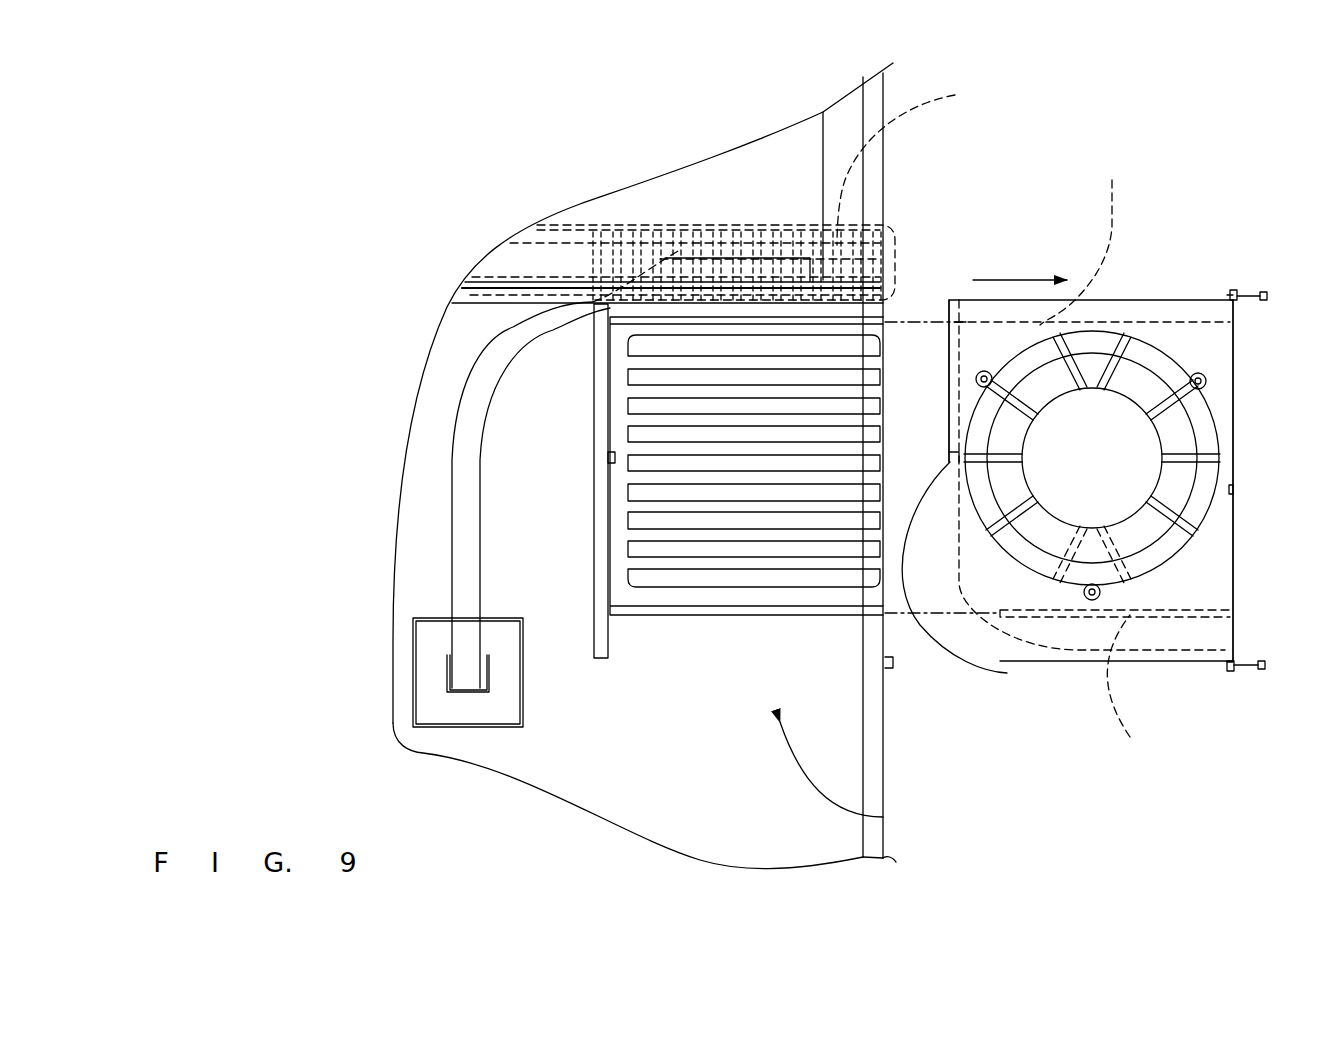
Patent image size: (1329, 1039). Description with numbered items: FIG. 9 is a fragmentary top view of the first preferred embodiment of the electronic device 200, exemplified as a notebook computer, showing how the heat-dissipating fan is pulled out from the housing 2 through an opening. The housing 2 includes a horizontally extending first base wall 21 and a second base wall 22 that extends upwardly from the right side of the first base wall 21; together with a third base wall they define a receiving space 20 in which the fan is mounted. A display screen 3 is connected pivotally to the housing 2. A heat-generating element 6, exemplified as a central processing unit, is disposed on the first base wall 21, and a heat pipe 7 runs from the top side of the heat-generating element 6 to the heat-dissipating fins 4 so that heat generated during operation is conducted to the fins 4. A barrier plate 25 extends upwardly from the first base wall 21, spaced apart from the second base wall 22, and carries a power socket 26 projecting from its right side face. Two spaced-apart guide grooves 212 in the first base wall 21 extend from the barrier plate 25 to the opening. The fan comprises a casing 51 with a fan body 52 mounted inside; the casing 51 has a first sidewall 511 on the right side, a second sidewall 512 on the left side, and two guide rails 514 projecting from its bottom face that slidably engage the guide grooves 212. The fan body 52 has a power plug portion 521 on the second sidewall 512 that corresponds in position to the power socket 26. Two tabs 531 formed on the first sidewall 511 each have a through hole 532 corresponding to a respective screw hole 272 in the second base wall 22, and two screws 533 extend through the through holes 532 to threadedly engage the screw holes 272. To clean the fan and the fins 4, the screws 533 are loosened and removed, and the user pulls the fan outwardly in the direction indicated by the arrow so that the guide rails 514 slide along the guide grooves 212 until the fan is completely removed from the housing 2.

The electronic device 200 is at (640, 127).
The housing 2 is at (1052, 862).
The display screen 3 is at (853, 113).
The heat-dissipating fins 4 is at (907, 164).
The heat-generating element 6 is at (470, 713).
The heat pipe 7 is at (467, 537).
The receiving space 20 is at (883, 817).
The first base wall 21 is at (680, 813).
The second base wall 22 is at (892, 765).
The barrier plate 25 is at (605, 640).
The power socket 26 is at (610, 460).
The guide grooves 212 is at (838, 325).
The screw holes 272 is at (893, 295).
The casing 51 is at (1210, 588).
The first sidewall 511 is at (1232, 412).
The second sidewall 512 is at (947, 432).
The guide rails 514 is at (1101, 454).
The fan body 52 is at (1135, 455).
The power plug portion 521 is at (979, 580).
The tabs 531 is at (1227, 295).
The through hole 532 is at (1232, 282).
The screws 533 is at (1267, 293).